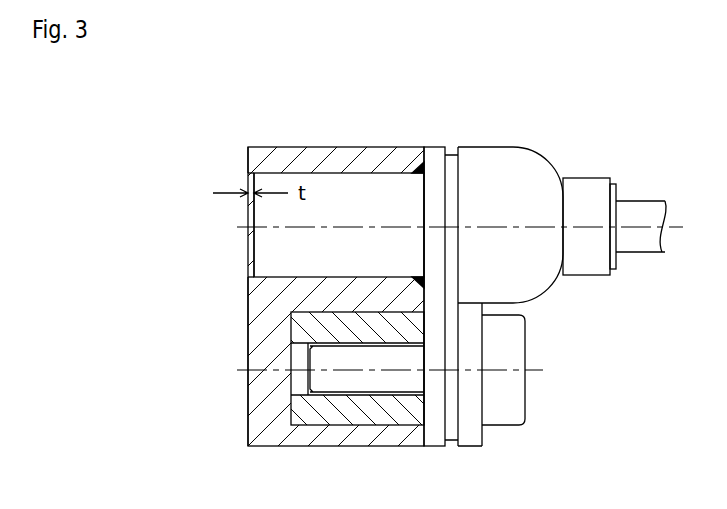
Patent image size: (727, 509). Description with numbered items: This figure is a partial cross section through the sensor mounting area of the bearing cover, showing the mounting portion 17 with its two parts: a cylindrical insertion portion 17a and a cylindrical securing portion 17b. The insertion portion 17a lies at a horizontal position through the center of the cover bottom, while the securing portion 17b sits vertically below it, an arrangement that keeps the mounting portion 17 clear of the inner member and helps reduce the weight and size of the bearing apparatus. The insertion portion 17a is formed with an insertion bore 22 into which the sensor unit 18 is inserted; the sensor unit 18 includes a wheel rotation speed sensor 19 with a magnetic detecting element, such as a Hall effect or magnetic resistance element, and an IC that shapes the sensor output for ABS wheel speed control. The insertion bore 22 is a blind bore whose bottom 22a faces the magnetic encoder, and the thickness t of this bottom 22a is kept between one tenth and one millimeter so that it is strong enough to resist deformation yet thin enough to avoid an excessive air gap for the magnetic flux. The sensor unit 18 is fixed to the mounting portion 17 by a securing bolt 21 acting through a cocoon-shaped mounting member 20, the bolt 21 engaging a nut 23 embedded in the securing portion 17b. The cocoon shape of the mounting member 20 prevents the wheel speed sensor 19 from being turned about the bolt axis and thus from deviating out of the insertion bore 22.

The mounting portion 17 is at (123, 177).
The cylindrical insertion portion 17a is at (248, 166).
The cylindrical securing portion 17b is at (248, 336).
The sensor unit 18 is at (512, 129).
The wheel rotation speed sensor 19 is at (292, 247).
The mounting member 20 is at (437, 397).
The securing bolt 21 is at (508, 342).
The insertion bore 22 is at (367, 176).
The bottom 22a is at (248, 206).
The nut 23 is at (298, 418).